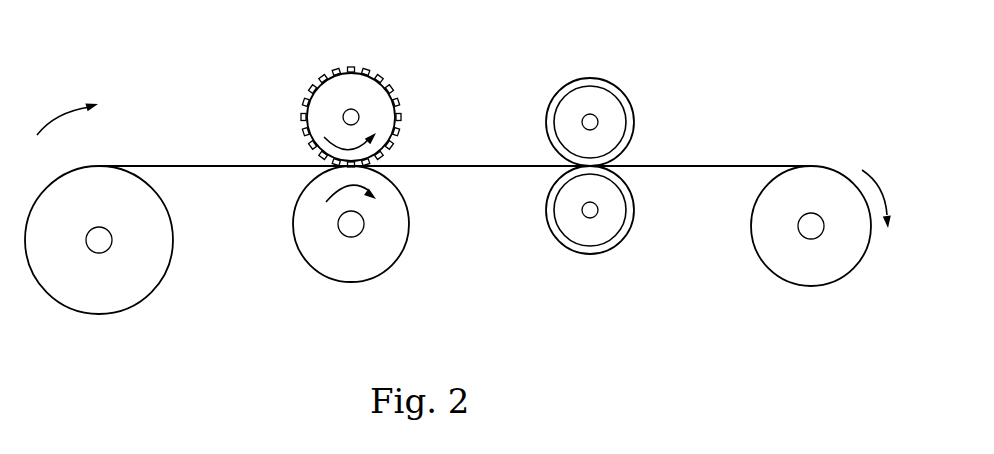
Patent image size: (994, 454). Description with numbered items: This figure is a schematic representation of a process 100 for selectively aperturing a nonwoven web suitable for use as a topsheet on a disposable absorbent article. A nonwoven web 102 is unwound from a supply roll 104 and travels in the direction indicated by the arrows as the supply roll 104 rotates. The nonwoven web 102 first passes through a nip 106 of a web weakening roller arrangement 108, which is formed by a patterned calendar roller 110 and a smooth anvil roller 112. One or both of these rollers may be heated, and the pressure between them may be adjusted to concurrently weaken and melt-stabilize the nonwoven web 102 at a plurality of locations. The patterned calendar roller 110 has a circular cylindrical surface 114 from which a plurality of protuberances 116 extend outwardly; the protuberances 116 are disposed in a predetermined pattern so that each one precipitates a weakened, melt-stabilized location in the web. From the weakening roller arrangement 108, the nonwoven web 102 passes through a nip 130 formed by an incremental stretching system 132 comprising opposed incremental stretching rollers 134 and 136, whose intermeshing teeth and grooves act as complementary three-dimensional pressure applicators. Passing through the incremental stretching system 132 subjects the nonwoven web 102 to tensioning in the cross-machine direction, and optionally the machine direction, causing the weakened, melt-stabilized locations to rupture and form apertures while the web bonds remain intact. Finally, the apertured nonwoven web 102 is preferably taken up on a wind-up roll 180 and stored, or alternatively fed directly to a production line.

The process for selectively aperturing a nonwoven web 100 is at (124, 106).
The nonwoven web 102 is at (255, 166).
The supply roll 104 is at (138, 293).
The nip 106 is at (300, 180).
The web weakening roller arrangement 108 is at (378, 50).
The patterned calendar roller 110 is at (387, 88).
The smooth anvil roller 112 is at (373, 267).
The circular cylindrical surface 114 is at (307, 97).
The protuberances 116 is at (400, 117).
The nip 130 is at (540, 180).
The incremental stretching system 132 is at (545, 75).
The incremental stretching roller 134 is at (608, 103).
The incremental stretching roller 136 is at (608, 232).
The wind-up roll 180 is at (822, 178).